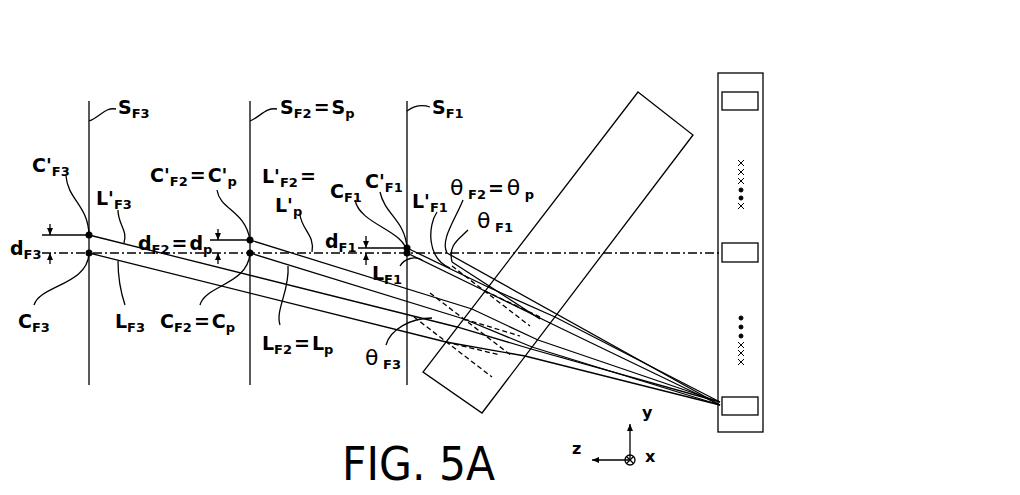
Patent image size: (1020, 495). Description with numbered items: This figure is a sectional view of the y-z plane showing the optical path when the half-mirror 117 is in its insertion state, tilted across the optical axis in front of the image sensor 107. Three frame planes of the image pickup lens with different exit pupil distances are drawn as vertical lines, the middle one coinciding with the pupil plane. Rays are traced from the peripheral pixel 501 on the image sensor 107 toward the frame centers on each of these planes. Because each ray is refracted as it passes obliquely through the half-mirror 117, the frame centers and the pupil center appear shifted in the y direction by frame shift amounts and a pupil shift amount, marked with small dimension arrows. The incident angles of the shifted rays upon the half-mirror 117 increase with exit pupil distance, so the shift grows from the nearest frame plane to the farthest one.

The image sensor 107 is at (720, 73).
The half-mirror 117 is at (613, 122).
The peripheral pixel 501 is at (760, 405).